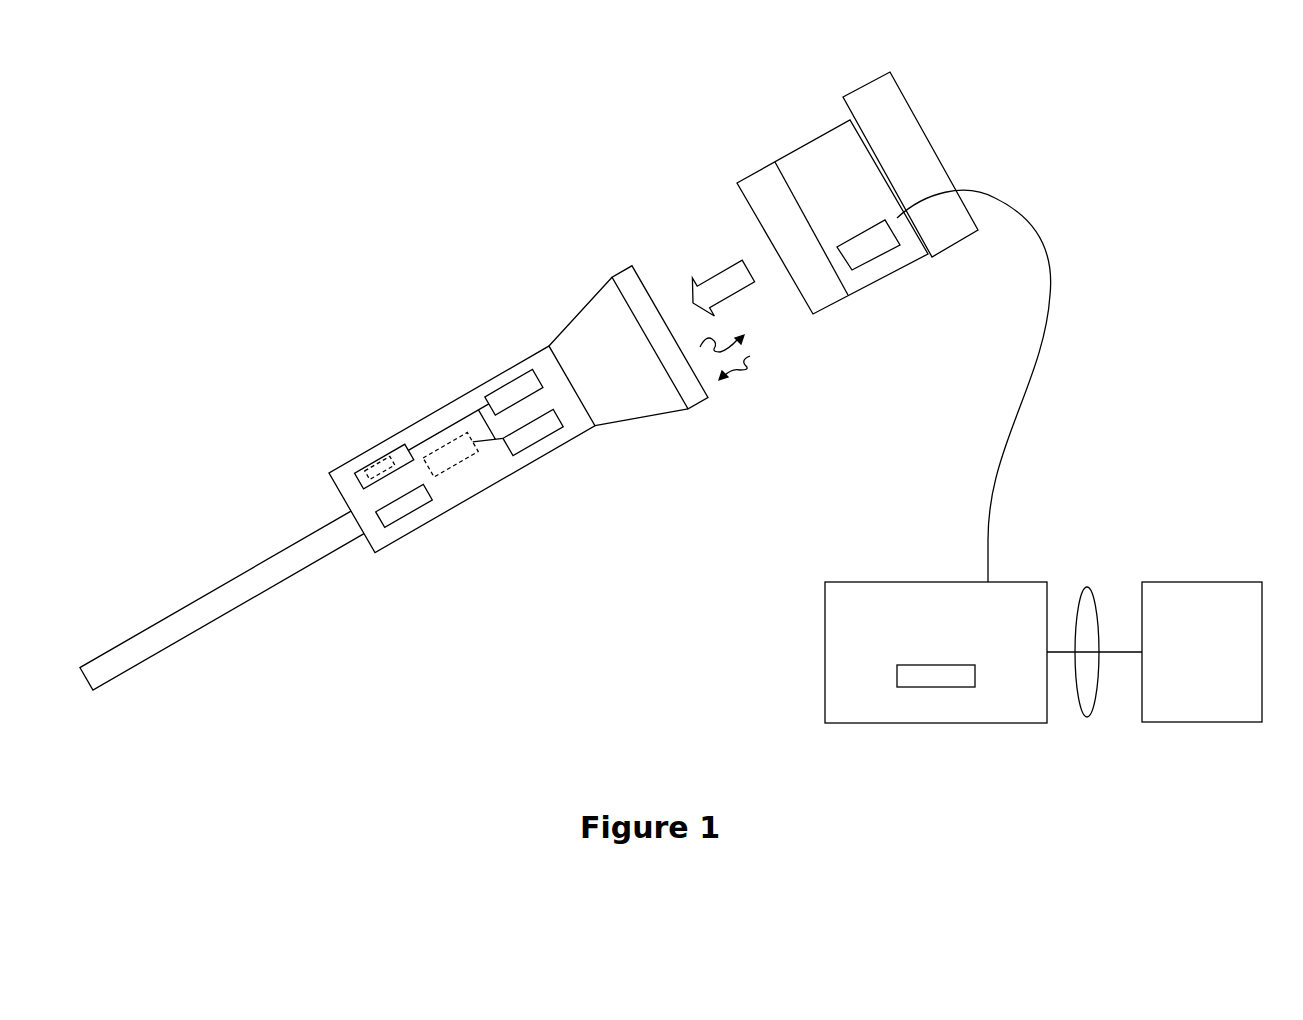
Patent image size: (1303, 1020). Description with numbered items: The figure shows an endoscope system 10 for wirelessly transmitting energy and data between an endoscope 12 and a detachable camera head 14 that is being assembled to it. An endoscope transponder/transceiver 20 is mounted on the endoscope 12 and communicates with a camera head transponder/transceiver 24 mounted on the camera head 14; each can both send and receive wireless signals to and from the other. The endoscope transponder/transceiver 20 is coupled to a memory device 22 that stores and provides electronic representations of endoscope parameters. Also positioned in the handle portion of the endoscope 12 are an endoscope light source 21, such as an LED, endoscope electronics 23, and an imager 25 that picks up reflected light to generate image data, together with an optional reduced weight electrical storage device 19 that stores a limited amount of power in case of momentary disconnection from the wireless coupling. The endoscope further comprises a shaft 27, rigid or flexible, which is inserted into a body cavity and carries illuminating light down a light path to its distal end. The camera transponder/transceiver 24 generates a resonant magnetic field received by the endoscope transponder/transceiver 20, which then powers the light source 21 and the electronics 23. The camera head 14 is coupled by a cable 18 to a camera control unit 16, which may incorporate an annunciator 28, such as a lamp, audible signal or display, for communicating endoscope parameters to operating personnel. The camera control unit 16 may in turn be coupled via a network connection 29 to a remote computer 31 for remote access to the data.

The endoscope system 10 is at (671, 443).
The endoscope 12 is at (418, 423).
The detachable camera head 14 is at (827, 132).
The camera control unit 16 is at (825, 638).
The cable 18 is at (1048, 256).
The electrical storage device 19 is at (457, 463).
The endoscope transponder/transceiver 20 is at (526, 450).
The endoscope light source 21 is at (404, 520).
The memory device 22 is at (500, 388).
The endoscope electronics 23 is at (366, 460).
The camera head transponder/transceiver 24 is at (867, 262).
The imager 25 is at (352, 485).
The shaft 27 is at (188, 640).
The annunciator 28 is at (937, 688).
The network connection 29 is at (1087, 717).
The remote computer 31 is at (1203, 724).